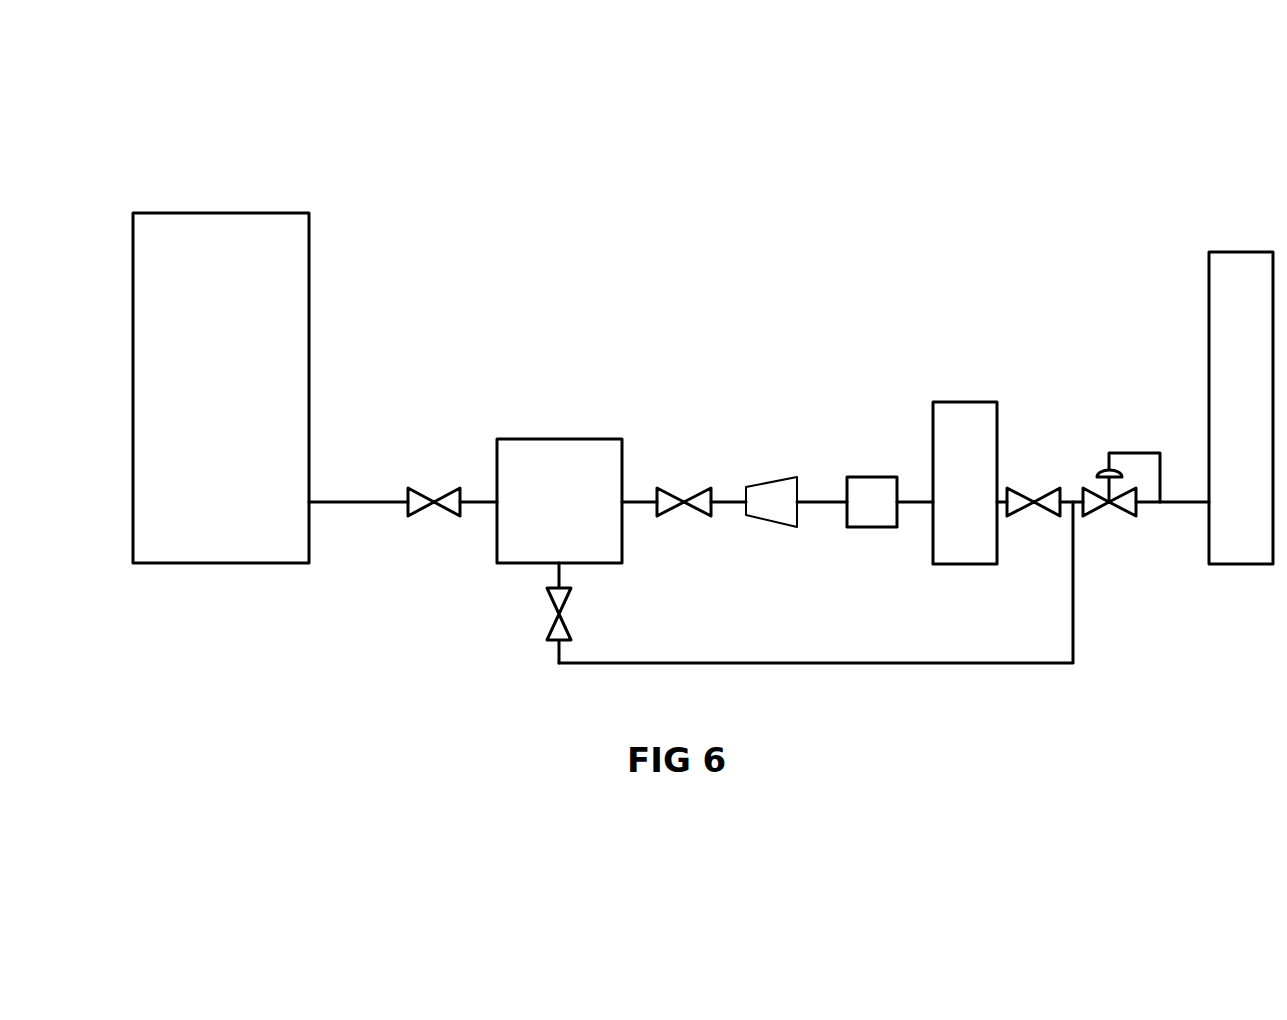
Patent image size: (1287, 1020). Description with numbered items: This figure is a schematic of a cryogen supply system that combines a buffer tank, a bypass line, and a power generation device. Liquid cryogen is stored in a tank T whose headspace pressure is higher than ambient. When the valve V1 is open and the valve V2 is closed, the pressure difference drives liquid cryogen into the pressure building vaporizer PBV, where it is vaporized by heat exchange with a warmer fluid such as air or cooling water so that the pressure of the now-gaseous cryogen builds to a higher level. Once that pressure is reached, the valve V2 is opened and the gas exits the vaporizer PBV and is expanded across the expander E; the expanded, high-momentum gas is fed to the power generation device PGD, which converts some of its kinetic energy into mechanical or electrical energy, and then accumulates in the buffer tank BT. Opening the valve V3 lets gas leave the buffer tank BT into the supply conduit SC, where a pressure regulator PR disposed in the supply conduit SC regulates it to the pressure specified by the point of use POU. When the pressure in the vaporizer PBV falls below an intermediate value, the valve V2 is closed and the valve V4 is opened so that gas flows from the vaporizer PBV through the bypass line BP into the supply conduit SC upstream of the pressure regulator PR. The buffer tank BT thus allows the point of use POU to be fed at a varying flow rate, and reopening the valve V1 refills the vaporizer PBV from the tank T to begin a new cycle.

The tank T is at (217, 243).
The valve V1 is at (425, 495).
The pressure building vaporizer PBV is at (570, 460).
The valve V2 is at (690, 497).
The expander E is at (773, 497).
The power generation device PGD is at (872, 497).
The buffer tank BT is at (959, 428).
The valve V3 is at (1028, 502).
The pressure regulator PR is at (1112, 410).
The supply conduit SC is at (1187, 500).
The point of use POU is at (1230, 280).
The valve V4 is at (560, 610).
The bypass line BP is at (990, 665).